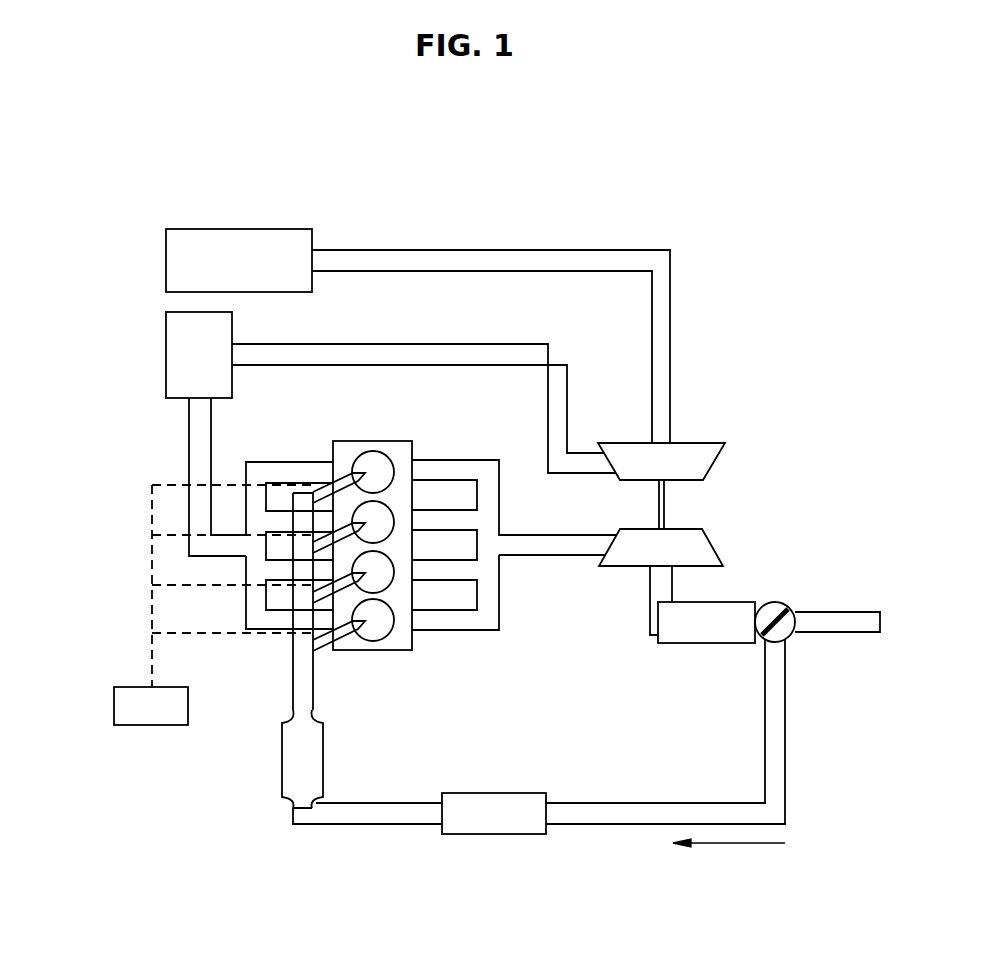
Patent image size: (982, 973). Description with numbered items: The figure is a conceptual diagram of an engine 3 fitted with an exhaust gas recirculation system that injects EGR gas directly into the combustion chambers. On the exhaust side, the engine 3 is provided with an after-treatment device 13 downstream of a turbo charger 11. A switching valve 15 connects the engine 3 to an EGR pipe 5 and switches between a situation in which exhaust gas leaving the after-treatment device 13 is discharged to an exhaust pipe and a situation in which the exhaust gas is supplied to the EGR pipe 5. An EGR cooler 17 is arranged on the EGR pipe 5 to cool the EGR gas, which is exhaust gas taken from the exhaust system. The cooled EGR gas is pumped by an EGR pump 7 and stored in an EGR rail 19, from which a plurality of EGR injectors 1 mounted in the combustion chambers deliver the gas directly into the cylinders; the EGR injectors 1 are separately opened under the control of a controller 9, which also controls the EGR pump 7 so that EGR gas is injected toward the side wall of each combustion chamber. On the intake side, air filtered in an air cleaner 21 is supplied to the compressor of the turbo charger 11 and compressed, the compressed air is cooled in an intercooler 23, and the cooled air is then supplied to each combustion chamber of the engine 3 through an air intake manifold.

The EGR injector 1 is at (362, 520).
The engine 3 is at (349, 441).
The EGR pipe 5 is at (773, 811).
The EGR pump 7 is at (282, 758).
The controller 9 is at (114, 708).
The turbo charger 11 is at (727, 463).
The after-treatment device 13 is at (706, 645).
The switching valve 15 is at (773, 611).
The EGR cooler 17 is at (494, 836).
The EGR rail 19 is at (290, 521).
The air cleaner 21 is at (239, 229).
The intercooler 23 is at (166, 355).